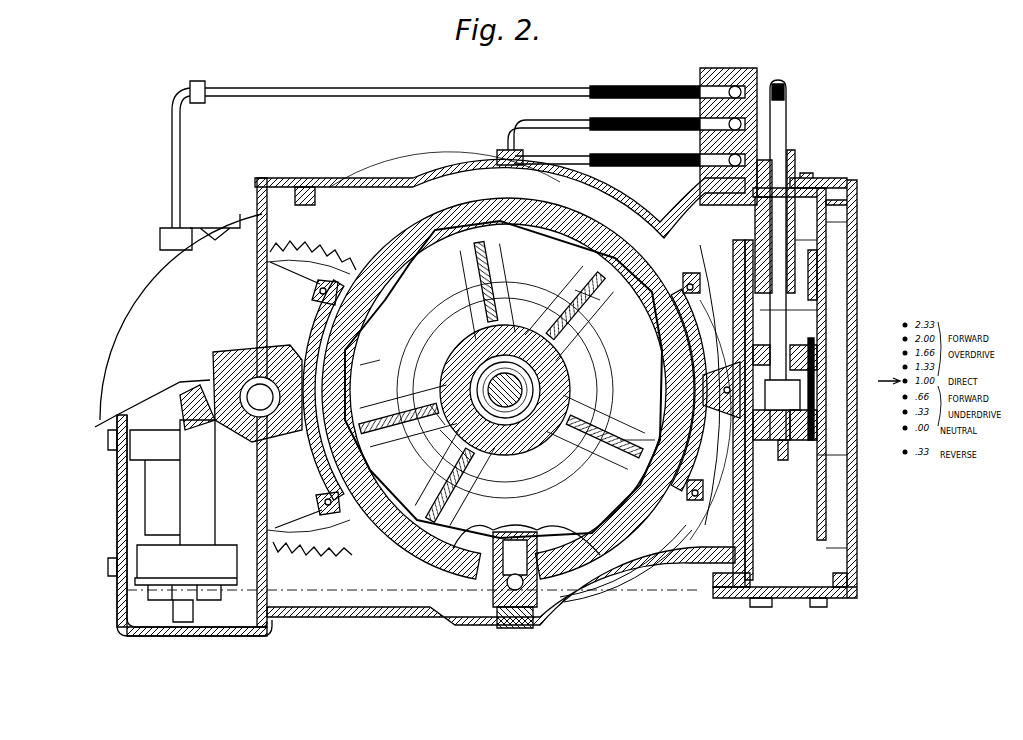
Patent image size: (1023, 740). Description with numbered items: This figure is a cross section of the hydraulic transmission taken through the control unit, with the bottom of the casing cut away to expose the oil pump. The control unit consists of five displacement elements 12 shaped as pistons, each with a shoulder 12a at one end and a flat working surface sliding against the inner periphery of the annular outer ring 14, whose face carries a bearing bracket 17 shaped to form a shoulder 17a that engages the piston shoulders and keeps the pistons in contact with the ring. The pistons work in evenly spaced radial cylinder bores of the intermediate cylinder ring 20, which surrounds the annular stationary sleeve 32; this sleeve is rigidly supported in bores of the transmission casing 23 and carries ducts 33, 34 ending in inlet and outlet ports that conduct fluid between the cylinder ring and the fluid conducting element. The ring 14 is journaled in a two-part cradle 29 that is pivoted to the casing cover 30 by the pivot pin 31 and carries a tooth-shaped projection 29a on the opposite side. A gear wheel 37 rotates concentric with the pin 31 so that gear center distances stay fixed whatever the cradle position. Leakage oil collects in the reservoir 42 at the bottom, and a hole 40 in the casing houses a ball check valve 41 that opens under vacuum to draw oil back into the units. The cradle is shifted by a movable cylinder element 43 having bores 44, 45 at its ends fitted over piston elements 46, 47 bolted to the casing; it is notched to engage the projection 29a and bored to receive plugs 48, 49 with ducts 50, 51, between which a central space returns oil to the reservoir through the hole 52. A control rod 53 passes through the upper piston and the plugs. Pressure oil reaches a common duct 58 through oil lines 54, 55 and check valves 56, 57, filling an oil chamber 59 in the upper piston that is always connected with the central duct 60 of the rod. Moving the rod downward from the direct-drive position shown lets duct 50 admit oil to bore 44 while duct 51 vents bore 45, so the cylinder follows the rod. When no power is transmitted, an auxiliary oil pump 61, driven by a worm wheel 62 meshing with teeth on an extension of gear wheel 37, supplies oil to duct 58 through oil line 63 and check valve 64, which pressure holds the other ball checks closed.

The displacement elements 12 is at (492, 248).
The shoulders 12a is at (372, 438).
The annular outer element or ring 14 is at (368, 262).
The bearing bracket 17 is at (662, 462).
The shoulder 17a is at (348, 368).
The second outer element or ring (intermediate element) 20 is at (580, 309).
The transmission casing 23 is at (385, 178).
The cradle 29 is at (305, 338).
The tooth shaped projection 29a is at (722, 492).
The cover portion of the casing 30 is at (260, 279).
The pivot pin or shaft 31 is at (257, 393).
The annular sleeve shaped stationary element 32 is at (514, 332).
The duct 33 is at (578, 386).
The duct 34 is at (434, 417).
The gear wheel 37 is at (314, 250).
The hole 40 is at (465, 550).
The ball check valve 41 is at (525, 578).
The oil reservoir 42 is at (380, 612).
The movable cylinder element 43 is at (815, 412).
The cylinder bore 44 is at (825, 316).
The cylinder bore 45 is at (832, 460).
The piston element 46 is at (835, 222).
The piston element 47 is at (834, 550).
The plug 48 is at (757, 345).
The plug 49 is at (803, 440).
The duct 50 is at (803, 381).
The duct 51 is at (778, 458).
The hole 52 is at (775, 418).
The control rod 53 is at (788, 101).
The oil line 54 is at (558, 124).
The oil line 55 is at (608, 166).
The check valve 56 is at (690, 133).
The check valve 57 is at (702, 172).
The common duct 58 is at (760, 138).
The oil chamber 59 is at (835, 252).
The central duct 60 is at (835, 288).
The auxiliary oil pump 61 is at (212, 564).
The worm wheel 62 is at (180, 411).
The oil line 63 is at (358, 96).
The check valve 64 is at (730, 68).